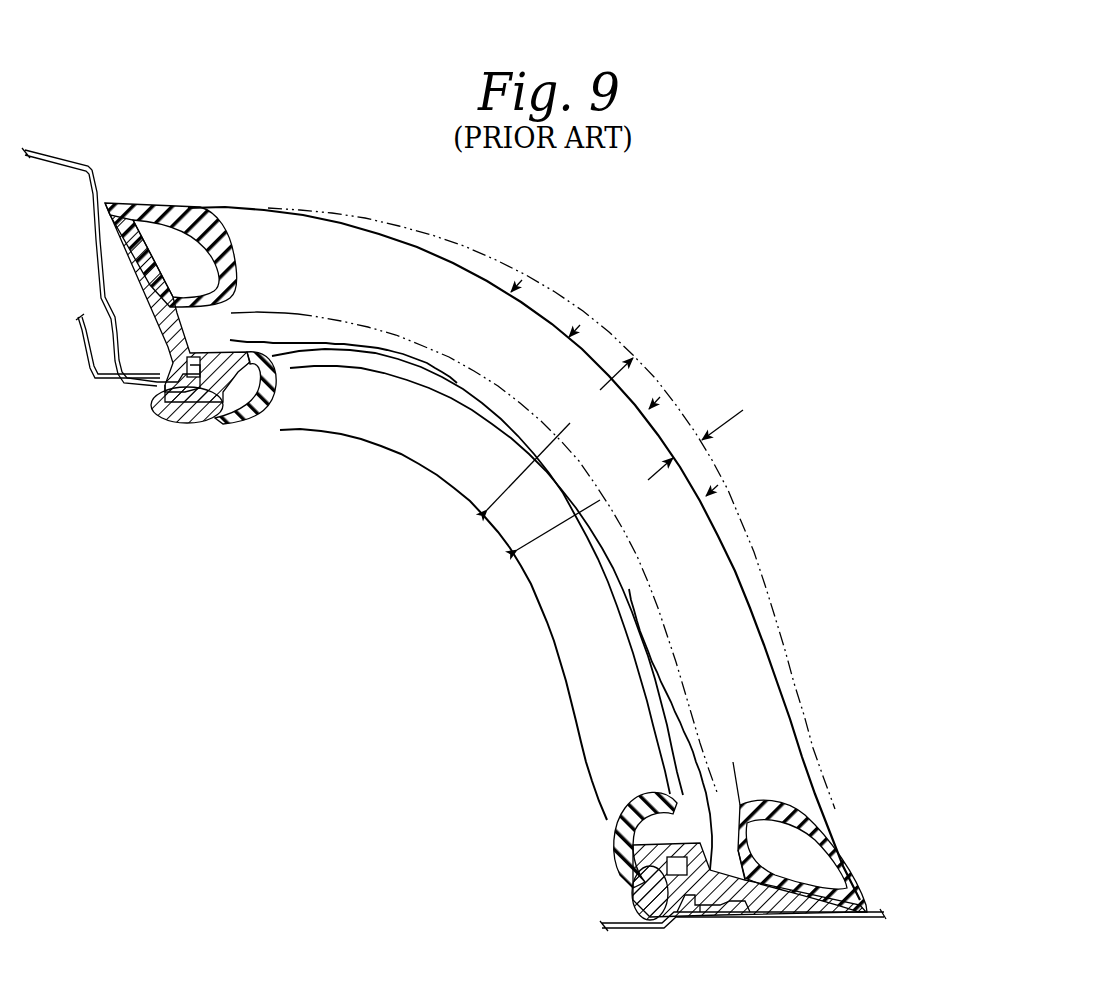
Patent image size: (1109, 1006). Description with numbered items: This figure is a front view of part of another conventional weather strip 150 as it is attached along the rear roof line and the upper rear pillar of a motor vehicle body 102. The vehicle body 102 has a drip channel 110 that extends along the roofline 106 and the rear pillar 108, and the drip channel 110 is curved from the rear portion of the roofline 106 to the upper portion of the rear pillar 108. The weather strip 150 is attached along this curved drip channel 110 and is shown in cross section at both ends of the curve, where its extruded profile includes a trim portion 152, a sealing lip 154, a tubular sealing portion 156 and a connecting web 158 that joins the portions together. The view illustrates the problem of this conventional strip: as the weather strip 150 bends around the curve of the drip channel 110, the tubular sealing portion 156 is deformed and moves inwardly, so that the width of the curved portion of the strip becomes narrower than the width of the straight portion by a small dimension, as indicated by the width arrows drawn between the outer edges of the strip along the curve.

The weather strip 150 is at (323, 205).
The trim portion 152 is at (168, 424).
The sealing lip 154 is at (258, 424).
The tubular sealing portion 156 is at (190, 205).
The connecting web 158 is at (157, 330).
The vehicle body 102 is at (95, 261).
The roofline 106 is at (52, 150).
The rear pillar 108 is at (824, 922).
The drip channel 110 is at (152, 383).